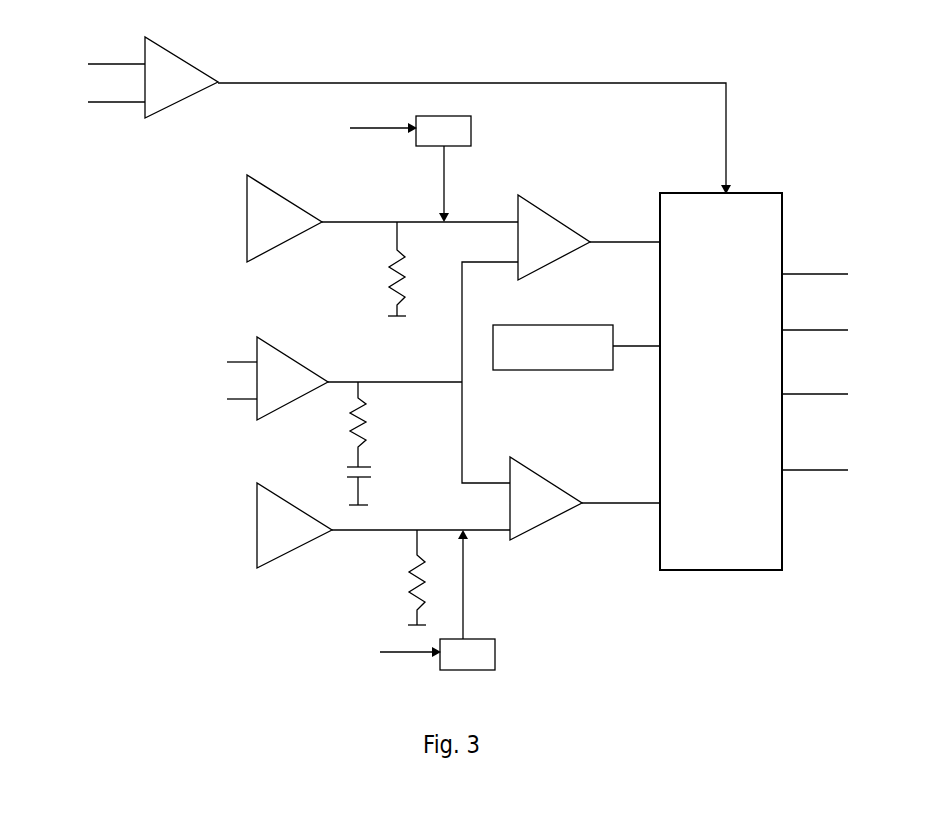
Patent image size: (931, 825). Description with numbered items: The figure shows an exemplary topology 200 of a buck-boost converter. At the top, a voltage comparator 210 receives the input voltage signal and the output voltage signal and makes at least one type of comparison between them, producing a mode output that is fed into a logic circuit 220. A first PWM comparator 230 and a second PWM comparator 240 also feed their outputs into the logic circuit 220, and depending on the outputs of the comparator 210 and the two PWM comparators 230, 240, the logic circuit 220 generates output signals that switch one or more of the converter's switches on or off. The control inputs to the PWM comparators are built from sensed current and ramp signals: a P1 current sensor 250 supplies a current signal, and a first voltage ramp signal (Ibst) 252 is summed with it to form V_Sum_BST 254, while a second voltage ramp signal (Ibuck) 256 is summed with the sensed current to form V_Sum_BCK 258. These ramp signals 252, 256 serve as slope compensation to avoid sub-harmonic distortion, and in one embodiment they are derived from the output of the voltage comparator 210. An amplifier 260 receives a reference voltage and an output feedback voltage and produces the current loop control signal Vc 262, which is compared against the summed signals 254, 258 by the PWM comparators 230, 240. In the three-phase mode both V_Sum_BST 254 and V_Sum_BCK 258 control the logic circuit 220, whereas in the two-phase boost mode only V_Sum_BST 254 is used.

The topology 200 is at (440, 353).
The comparator 210 is at (178, 106).
The logic circuit 220 is at (783, 193).
The first PWM comparator 230 is at (548, 215).
The second PWM comparator 240 is at (533, 473).
The P1 current sensor 250 is at (247, 243).
The first voltage ramp signal (Ibst) 252 is at (444, 159).
The V_Sum_BST 254 is at (368, 223).
The second voltage ramp signal (Ibuck) 256 is at (463, 558).
The V_Sum_BCK 258 is at (470, 528).
The amplifier 260 is at (287, 352).
The current loop control signal Vc 262 is at (382, 381).